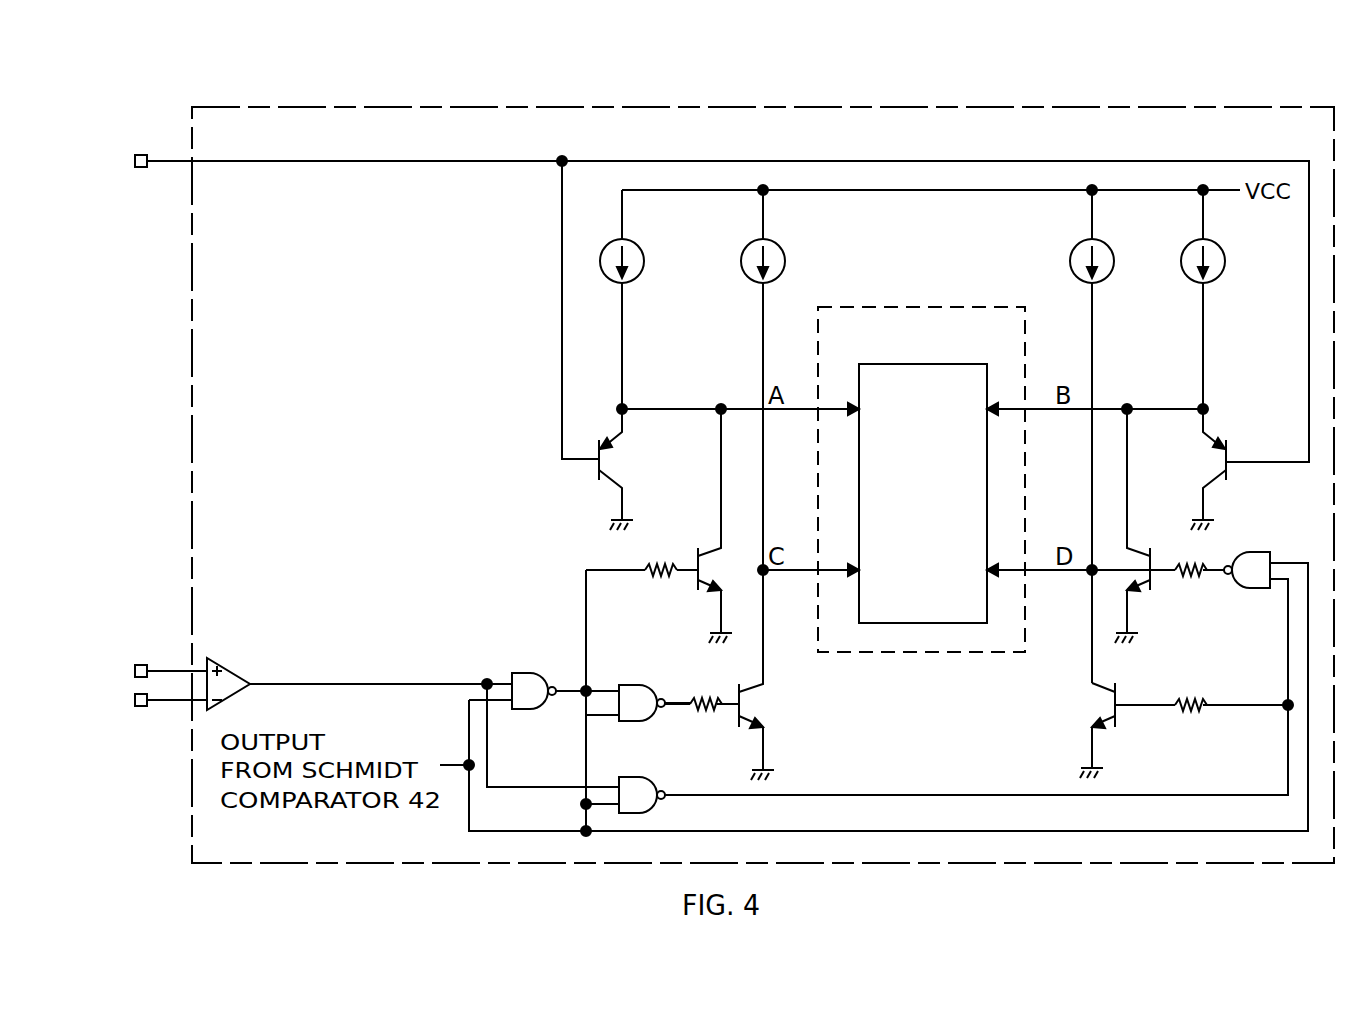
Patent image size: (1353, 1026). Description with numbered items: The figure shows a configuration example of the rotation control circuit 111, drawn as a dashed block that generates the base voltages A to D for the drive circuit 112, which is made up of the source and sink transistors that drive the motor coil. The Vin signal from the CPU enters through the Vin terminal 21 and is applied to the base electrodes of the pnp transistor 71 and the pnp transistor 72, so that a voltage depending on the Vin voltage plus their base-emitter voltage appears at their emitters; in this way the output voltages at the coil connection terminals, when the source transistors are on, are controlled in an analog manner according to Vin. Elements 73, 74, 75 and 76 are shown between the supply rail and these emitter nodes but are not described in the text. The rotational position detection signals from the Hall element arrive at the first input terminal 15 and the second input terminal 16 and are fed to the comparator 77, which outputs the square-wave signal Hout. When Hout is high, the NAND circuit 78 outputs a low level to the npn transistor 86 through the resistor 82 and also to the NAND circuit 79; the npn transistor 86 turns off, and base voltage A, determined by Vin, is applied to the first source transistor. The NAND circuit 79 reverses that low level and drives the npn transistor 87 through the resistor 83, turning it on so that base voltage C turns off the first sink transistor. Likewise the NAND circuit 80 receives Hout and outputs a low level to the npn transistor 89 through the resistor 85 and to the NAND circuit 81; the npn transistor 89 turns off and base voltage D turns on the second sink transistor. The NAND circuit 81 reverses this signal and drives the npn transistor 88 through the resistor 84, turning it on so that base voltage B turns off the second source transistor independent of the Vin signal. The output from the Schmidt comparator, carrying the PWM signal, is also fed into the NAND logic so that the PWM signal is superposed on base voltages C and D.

The S1 input terminal 15 is at (141, 664).
The S2 input terminal 16 is at (141, 707).
The Vin terminal 21 is at (141, 154).
The pnp transistor 71 is at (597, 471).
The pnp transistor 72 is at (1228, 471).
The constant current source 73 is at (645, 262).
The constant current source 74 is at (1180, 262).
The constant current source 75 is at (786, 262).
The constant current source 76 is at (1069, 262).
The comparator 77 is at (238, 670).
The NAND circuit 78 is at (542, 672).
The NAND circuit 79 is at (651, 684).
The NAND circuit 80 is at (651, 776).
The NAND circuit 81 is at (1229, 578).
The resistor 82 is at (657, 564).
The resistor 83 is at (692, 716).
The resistor 84 is at (1181, 578).
The resistor 85 is at (1191, 714).
The npn transistor 86 is at (696, 546).
The npn transistor 87 is at (745, 716).
The npn transistor 88 is at (1149, 547).
The npn transistor 89 is at (1117, 698).
The rotation control circuit 111 is at (1010, 108).
The drive circuit 112 is at (923, 364).